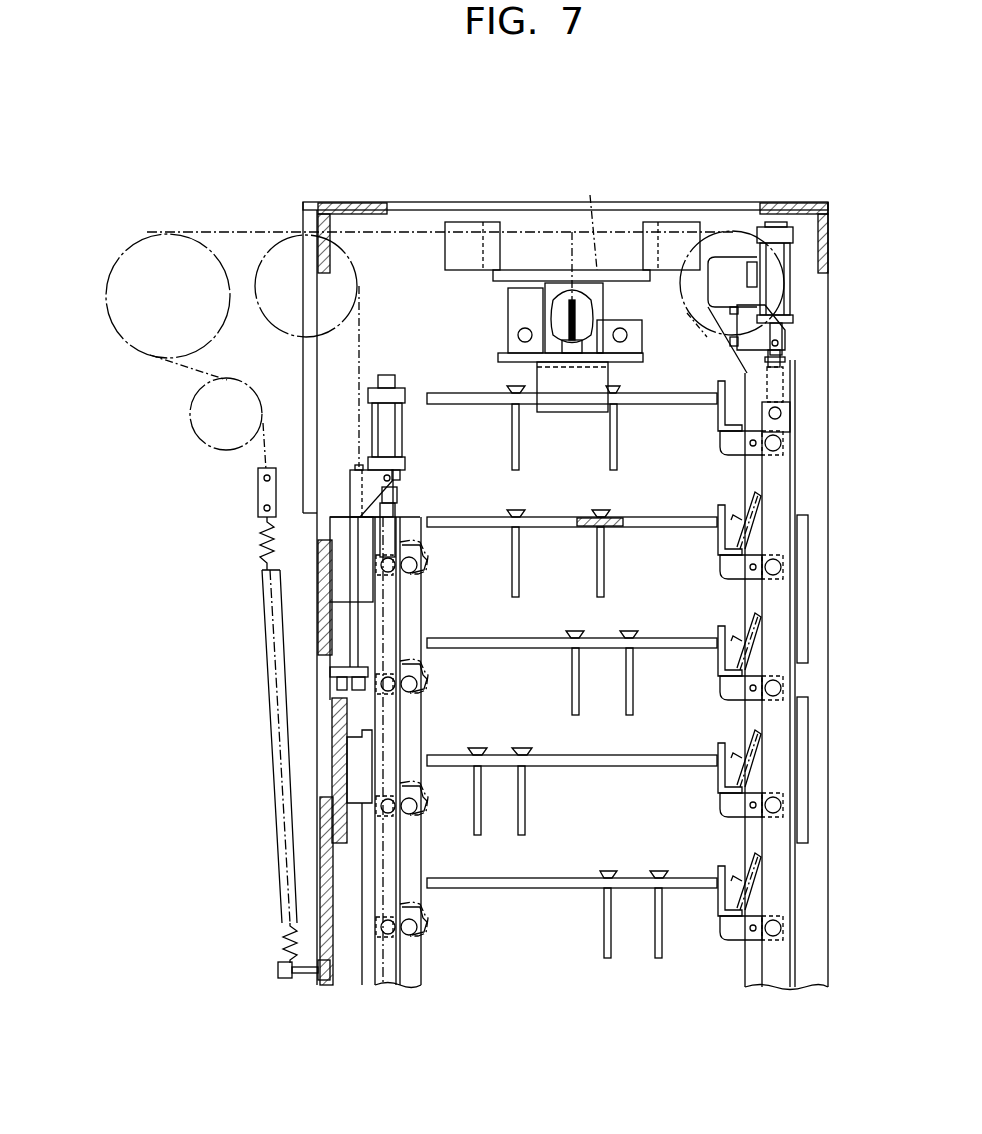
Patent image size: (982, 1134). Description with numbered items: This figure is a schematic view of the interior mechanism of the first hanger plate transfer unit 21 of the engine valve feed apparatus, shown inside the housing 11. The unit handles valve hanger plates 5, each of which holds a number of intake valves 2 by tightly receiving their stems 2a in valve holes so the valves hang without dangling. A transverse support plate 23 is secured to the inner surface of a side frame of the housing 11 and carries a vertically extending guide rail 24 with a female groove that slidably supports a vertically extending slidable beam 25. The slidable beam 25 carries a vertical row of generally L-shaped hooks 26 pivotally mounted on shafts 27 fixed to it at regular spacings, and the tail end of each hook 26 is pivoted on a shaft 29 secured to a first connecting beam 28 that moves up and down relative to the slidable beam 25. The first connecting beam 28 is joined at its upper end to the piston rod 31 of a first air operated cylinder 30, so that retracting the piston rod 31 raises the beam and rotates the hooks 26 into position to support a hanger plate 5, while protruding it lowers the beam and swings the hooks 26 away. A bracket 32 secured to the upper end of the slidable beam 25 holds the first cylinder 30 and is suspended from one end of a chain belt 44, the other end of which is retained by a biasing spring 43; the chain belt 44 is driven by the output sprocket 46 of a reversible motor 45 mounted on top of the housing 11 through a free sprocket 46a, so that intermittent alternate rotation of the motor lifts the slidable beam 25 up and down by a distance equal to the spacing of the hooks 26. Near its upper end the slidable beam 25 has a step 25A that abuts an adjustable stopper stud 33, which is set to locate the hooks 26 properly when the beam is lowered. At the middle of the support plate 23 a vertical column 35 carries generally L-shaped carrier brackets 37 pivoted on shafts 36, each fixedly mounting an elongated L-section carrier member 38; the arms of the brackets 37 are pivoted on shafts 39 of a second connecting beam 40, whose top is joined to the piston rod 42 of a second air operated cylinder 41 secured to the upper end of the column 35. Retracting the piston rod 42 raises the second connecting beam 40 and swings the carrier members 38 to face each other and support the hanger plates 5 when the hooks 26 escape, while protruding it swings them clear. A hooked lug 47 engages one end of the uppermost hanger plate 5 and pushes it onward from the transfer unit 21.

The intake valve 2 is at (513, 388).
The stem 2a is at (512, 455).
The valve hanger plate 5 is at (660, 405).
The housing 11 is at (830, 484).
The first hanger plate transfer unit 21 is at (652, 165).
The transverse support plate 23 is at (332, 715).
The guide rail 24 is at (362, 764).
The slidable beam 25 is at (420, 620).
The step 25A is at (355, 575).
The hook 26 is at (422, 552).
The shaft 27 is at (417, 571).
The first connecting beam 28 is at (405, 740).
The shaft 29 is at (380, 682).
The first air operated cylinder 30 is at (404, 442).
The piston rod 31 is at (399, 494).
The bracket 32 is at (370, 482).
The adjustable stopper stud 33 is at (355, 627).
The column 35 is at (792, 395).
The shaft 36 is at (766, 455).
The carrier bracket 37 is at (720, 440).
The elongated carrier member 38 is at (718, 387).
The shaft 39 is at (792, 440).
The second connecting beam 40 is at (800, 612).
The second air operated cylinder 41 is at (795, 297).
The piston rod 42 is at (792, 368).
The biasing spring 43 is at (222, 562).
The chain belt 44 is at (400, 232).
The reversible motor 45 is at (517, 335).
The output sprocket 46 is at (157, 355).
The free sprocket 46a is at (260, 315).
The hooked lug 47 is at (567, 405).